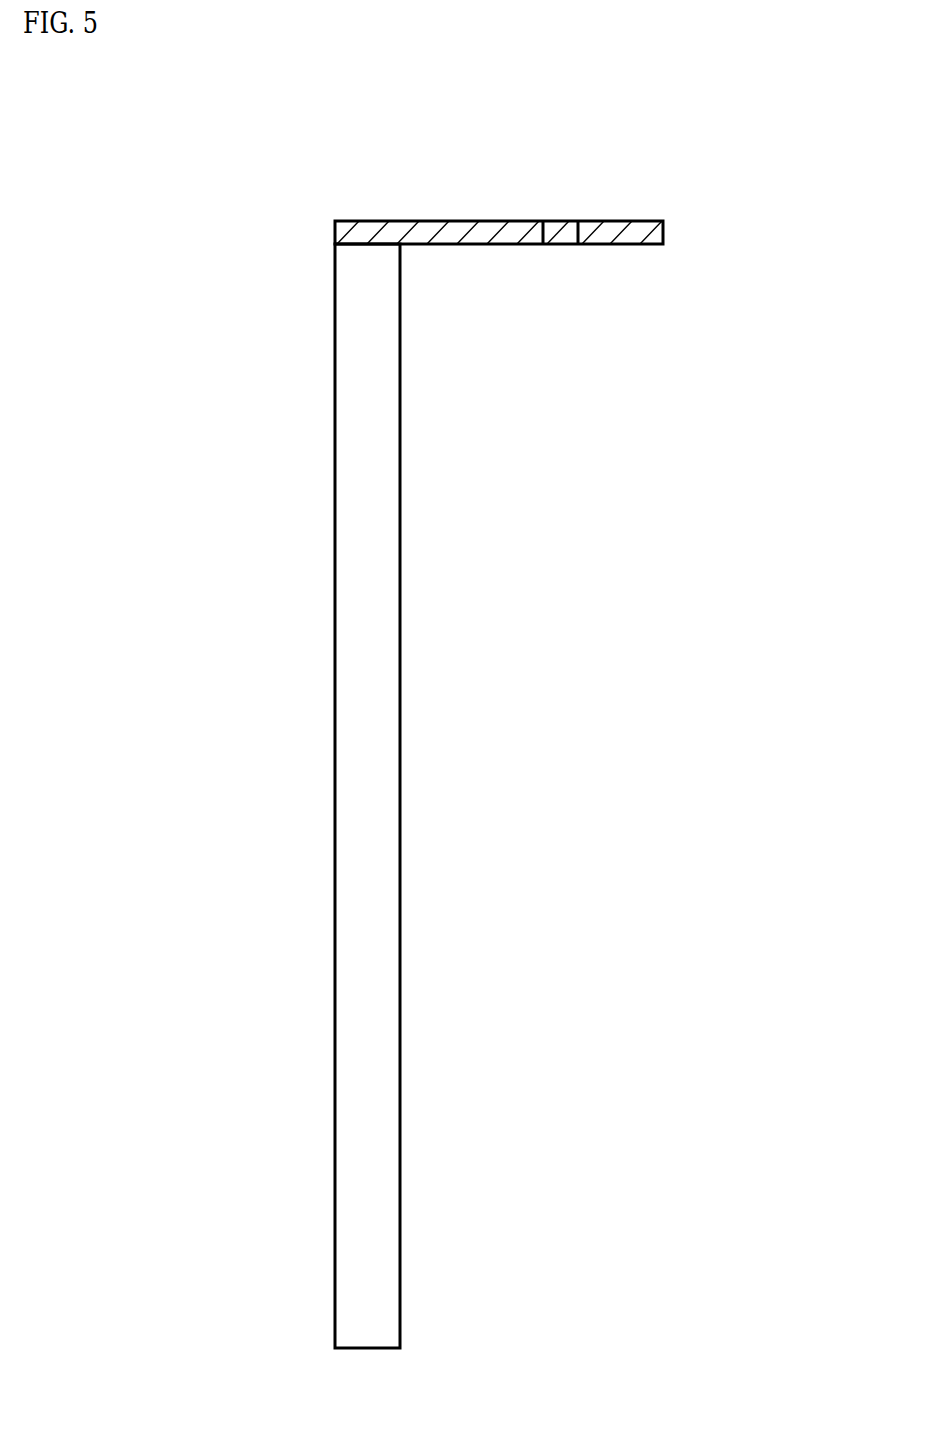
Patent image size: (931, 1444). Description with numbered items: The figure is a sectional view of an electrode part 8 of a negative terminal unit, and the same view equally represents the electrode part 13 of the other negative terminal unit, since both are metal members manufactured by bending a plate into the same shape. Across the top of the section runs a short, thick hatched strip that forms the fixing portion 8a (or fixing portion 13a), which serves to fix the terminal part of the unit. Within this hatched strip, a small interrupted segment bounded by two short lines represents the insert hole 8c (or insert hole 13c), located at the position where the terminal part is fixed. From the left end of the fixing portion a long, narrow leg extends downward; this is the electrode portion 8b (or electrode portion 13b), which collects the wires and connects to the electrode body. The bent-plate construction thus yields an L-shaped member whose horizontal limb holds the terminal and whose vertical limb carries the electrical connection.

The electrode part 8 is at (545, 723).
The electrode part 13 is at (347, 173).
The fixing portion 8a is at (573, 221).
The fixing portion 13a is at (637, 233).
The electrode portion 8b is at (445, 796).
The electrode portion 13b is at (373, 845).
The insert hole 8c is at (500, 192).
The insert hole 13c is at (545, 232).